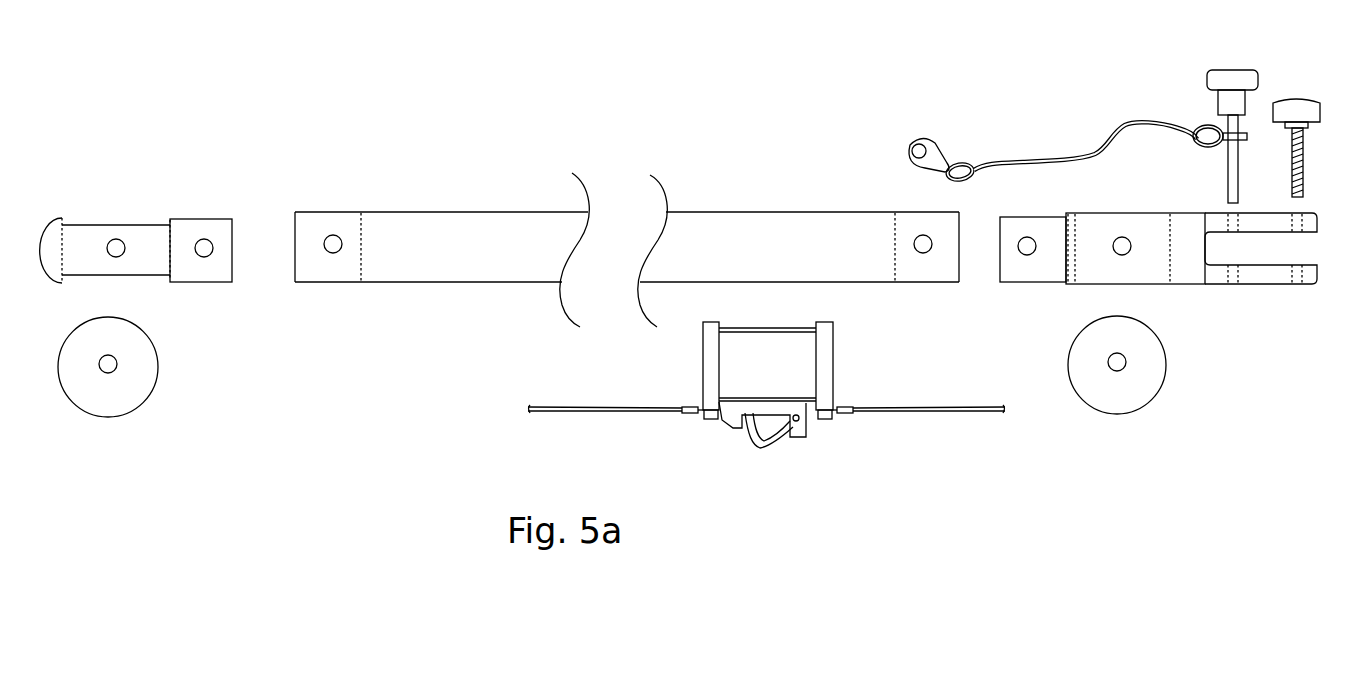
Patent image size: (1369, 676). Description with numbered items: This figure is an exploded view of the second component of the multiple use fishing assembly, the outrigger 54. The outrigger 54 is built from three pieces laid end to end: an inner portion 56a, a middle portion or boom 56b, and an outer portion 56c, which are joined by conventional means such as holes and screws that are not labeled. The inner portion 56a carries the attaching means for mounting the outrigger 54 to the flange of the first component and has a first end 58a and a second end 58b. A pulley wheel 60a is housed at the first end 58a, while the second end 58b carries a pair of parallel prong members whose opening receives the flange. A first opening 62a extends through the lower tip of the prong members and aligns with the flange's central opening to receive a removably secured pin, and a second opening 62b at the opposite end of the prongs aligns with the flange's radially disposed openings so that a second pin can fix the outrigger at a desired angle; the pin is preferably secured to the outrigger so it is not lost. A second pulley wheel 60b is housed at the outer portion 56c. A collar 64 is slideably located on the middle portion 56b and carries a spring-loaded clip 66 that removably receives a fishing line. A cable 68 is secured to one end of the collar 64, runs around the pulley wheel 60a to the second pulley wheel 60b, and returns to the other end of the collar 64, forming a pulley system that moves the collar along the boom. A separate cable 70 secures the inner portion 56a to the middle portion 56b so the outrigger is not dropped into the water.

The outrigger 54 is at (1153, 91).
The inner portion 56a is at (1184, 265).
The middle portion 56b is at (761, 210).
The outer portion 56c is at (206, 203).
The first end 58a is at (1086, 213).
The second end 58b is at (1319, 287).
The pulley wheel 60a is at (1145, 386).
The second pulley wheel 60b is at (135, 385).
The first opening 62a is at (1305, 223).
The second opening 62b is at (1228, 225).
The collar 64 is at (833, 338).
The spring-loaded clip 66 is at (777, 440).
The cable 68 is at (583, 412).
The cable 70 is at (1107, 145).